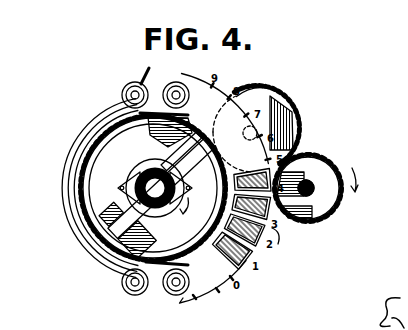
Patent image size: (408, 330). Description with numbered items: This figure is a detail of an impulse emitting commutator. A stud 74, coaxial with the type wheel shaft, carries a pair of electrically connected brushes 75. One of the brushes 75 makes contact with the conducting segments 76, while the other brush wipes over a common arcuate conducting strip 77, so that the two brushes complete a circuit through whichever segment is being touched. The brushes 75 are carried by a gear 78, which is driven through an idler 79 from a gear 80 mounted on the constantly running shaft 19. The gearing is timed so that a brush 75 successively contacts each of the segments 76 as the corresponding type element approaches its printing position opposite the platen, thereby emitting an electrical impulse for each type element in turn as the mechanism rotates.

The constantly running shaft 19 is at (314, 195).
The stud 74 is at (140, 172).
The brushes 75 is at (158, 136).
The conducting segments 76 is at (279, 236).
The common arcuate conducting strip 77 is at (75, 218).
The gear 78 is at (157, 262).
The idler 79 is at (268, 108).
The gear 80 is at (321, 160).